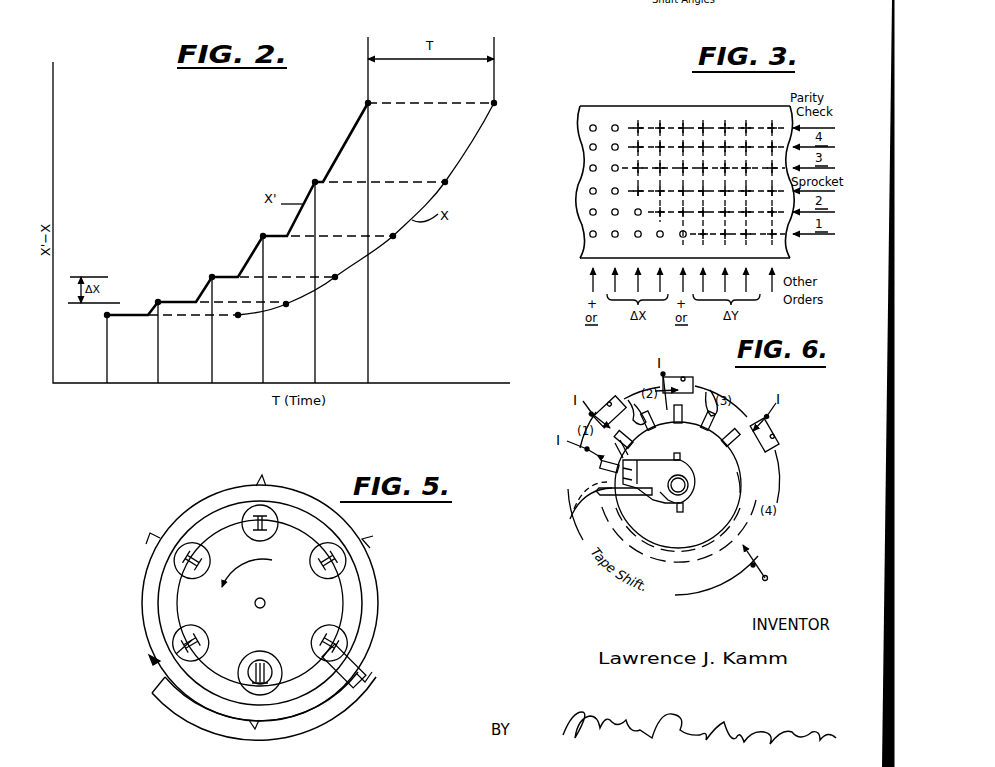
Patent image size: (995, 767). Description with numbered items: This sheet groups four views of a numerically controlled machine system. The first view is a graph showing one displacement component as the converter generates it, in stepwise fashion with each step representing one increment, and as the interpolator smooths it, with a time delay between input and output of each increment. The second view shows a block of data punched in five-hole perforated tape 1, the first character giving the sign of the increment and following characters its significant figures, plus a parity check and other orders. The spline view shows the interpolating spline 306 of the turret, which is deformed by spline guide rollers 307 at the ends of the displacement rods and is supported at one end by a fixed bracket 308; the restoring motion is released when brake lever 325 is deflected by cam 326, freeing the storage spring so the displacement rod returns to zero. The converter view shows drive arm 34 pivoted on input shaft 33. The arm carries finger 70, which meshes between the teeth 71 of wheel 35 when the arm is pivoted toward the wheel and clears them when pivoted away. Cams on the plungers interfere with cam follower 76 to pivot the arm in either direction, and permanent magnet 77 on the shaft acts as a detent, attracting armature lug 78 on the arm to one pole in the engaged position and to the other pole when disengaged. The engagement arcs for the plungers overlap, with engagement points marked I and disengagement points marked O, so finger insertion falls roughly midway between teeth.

In FIG. 3, the perforated tape 1 is at (683, 104).
In FIG. 6, the input shaft 33 is at (670, 476).
In FIG. 6, the drive arm 34 is at (605, 497).
In FIG. 6, the wheel 35 is at (737, 495).
In FIG. 6, the finger 70 is at (575, 503).
In FIG. 6, the teeth 71 is at (671, 396).
In FIG. 6, the cam follower 76 is at (580, 511).
In FIG. 6, the permanent magnet 77 is at (642, 470).
In FIG. 6, the armature lug 78 is at (654, 503).
In FIG. 5, the spline 306 is at (163, 603).
In FIG. 5, the spline guide rollers 307 is at (180, 654).
In FIG. 5, the fixed bracket 308 is at (337, 712).
In FIG. 5, the brake lever 325 is at (151, 659).
In FIG. 5, the cam 326 is at (187, 707).